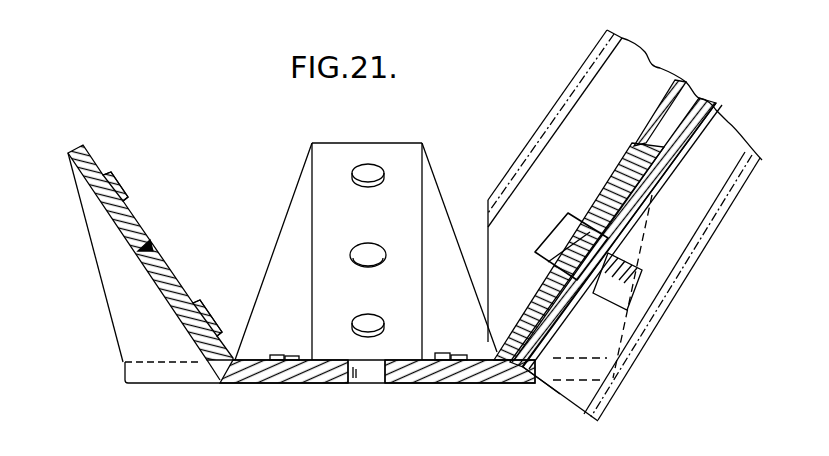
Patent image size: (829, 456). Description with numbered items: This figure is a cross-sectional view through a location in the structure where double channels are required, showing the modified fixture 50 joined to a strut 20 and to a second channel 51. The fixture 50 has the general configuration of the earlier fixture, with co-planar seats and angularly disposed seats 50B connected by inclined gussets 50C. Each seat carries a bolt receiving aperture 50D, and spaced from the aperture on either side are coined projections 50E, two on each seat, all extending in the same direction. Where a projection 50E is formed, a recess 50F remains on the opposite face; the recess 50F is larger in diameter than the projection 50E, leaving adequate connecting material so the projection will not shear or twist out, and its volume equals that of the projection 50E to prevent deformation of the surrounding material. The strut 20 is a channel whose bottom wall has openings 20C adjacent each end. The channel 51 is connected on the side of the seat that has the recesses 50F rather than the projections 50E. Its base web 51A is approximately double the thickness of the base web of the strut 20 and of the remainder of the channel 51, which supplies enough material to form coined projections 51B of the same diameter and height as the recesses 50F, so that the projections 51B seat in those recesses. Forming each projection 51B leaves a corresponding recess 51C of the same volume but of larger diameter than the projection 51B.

The strut 20 is at (661, 59).
The opening 20C is at (533, 317).
The modified fixture 50 is at (310, 387).
The angularly disposed seat 50B is at (140, 221).
The inclined gusset 50C is at (272, 262).
The bolt receiving aperture 50D is at (167, 277).
The coined projection 50E is at (117, 173).
The recess 50F is at (197, 332).
The channel 51 is at (552, 233).
The base web 51A is at (694, 96).
The coined projection 51B is at (500, 330).
The recess 51C is at (553, 358).